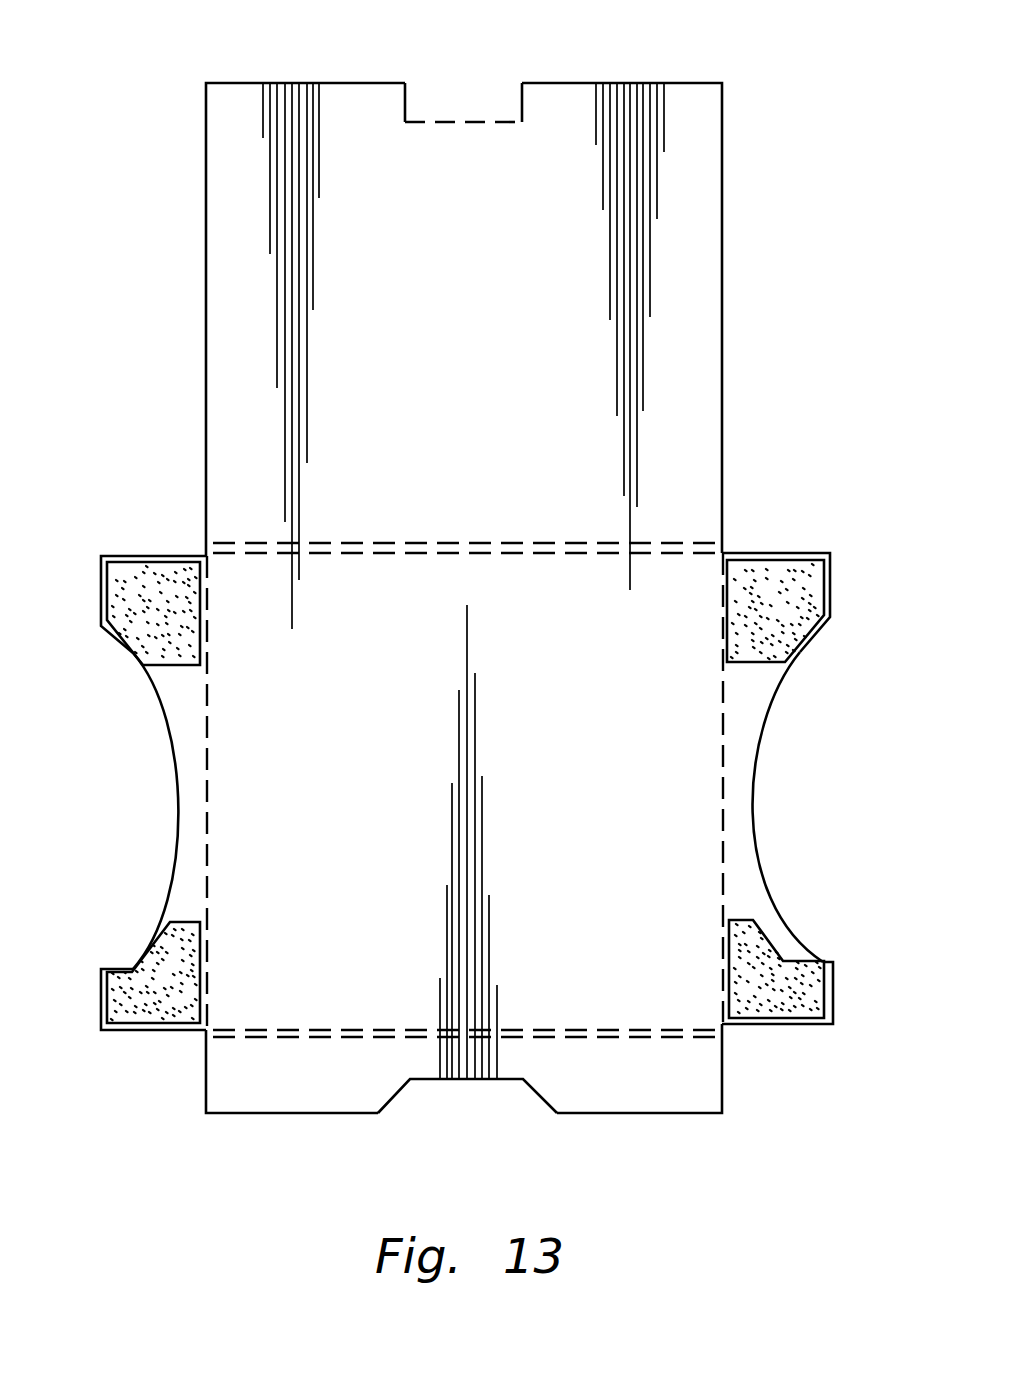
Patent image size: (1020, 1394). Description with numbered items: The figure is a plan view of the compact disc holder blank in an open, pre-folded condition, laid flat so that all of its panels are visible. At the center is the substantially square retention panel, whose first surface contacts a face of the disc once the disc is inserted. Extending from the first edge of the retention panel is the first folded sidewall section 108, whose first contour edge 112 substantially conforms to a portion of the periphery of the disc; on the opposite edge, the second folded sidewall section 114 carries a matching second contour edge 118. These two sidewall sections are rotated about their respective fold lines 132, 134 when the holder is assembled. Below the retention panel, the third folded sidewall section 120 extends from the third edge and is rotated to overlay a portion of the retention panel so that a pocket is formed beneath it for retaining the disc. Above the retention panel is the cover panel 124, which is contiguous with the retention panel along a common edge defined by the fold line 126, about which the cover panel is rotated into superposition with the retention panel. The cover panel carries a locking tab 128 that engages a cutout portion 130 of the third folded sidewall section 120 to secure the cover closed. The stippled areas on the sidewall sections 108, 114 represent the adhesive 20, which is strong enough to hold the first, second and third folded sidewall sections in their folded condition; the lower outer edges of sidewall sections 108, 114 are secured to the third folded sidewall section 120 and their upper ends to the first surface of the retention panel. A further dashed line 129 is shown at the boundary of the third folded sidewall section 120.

The adhesive 20 is at (813, 598).
The first folded sidewall section 108 is at (745, 748).
The first contour edge 112 is at (753, 806).
The second folded sidewall section 114 is at (182, 760).
The second contour edge 118 is at (173, 832).
The third folded sidewall section 120 is at (627, 1105).
The cover panel 124 is at (705, 225).
The fold line 126 is at (722, 548).
The locking tab 128 is at (462, 92).
The lower fold line 129 is at (724, 1030).
The cutout portion 130 is at (478, 1079).
The fold line 132 is at (723, 722).
The fold line 134 is at (207, 735).